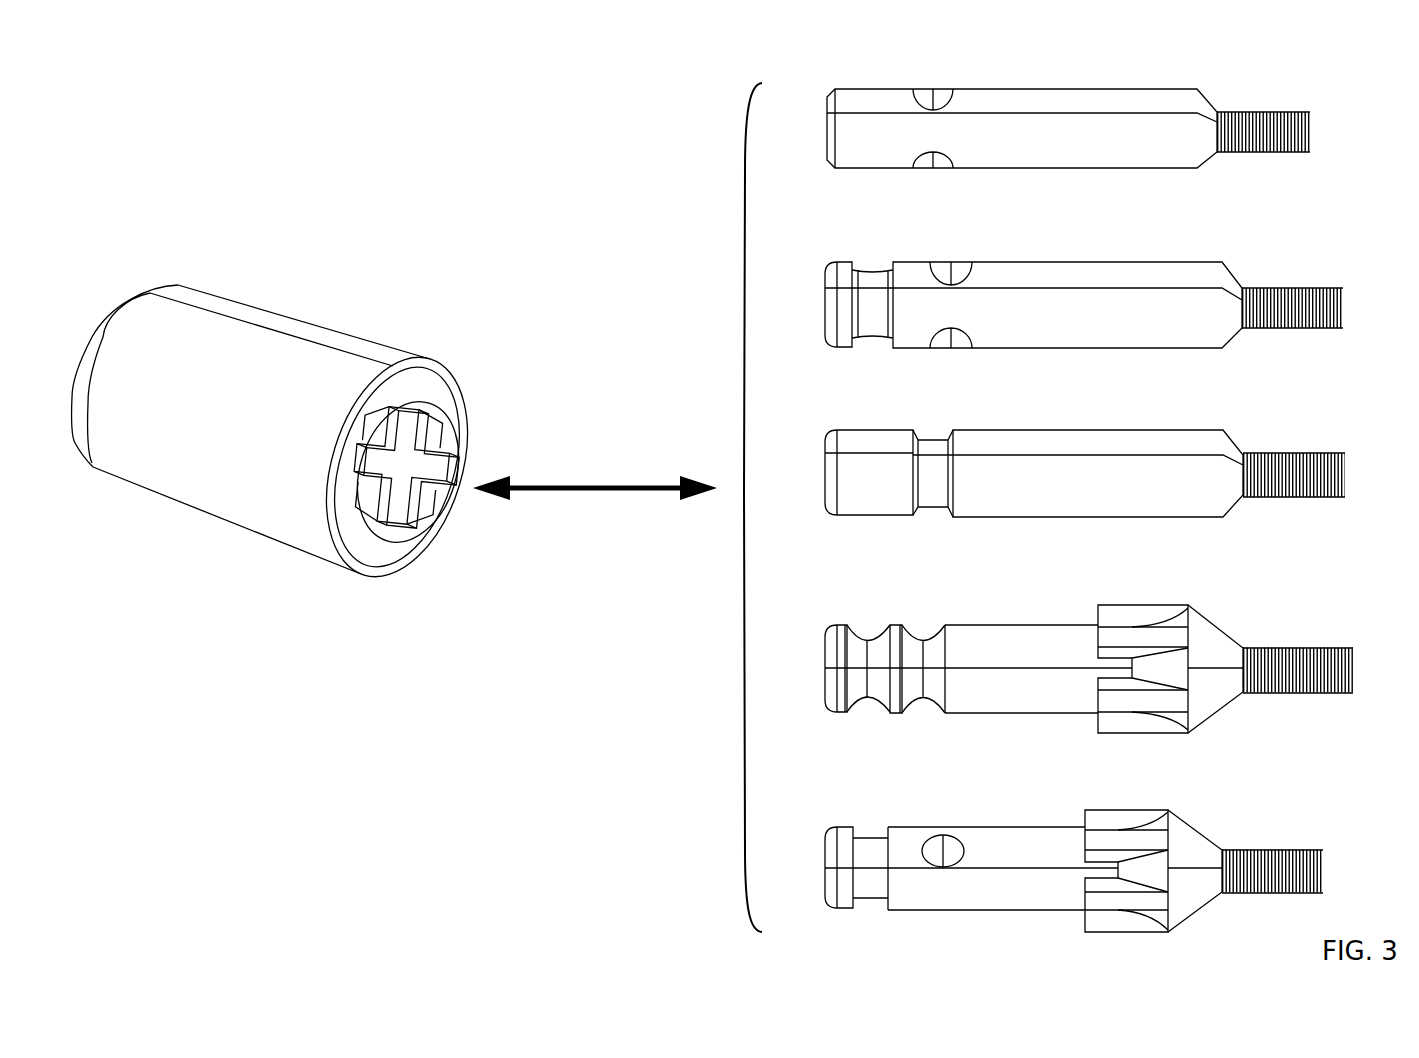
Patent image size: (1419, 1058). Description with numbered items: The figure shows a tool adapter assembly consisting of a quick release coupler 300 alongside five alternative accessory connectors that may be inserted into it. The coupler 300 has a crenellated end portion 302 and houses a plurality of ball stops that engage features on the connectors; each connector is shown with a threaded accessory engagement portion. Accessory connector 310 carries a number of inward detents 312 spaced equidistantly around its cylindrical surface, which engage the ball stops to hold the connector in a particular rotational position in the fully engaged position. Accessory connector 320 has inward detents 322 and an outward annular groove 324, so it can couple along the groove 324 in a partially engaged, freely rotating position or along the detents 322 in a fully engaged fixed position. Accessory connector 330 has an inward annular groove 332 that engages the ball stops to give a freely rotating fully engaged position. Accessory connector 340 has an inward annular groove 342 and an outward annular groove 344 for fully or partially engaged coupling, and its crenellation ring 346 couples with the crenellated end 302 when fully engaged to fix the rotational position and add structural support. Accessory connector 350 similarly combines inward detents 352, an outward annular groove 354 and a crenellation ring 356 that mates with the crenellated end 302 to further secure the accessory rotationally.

The quick release coupler 300 is at (356, 257).
The crenellated end portion 302 is at (462, 453).
The accessory connector 310 is at (1301, 82).
The inward detents 312 is at (935, 90).
The accessory connector 320 is at (1301, 257).
The inward detents 322 is at (957, 262).
The outward annular groove 324 is at (875, 270).
The accessory connector 330 is at (1300, 425).
The inward annular groove 332 is at (938, 435).
The accessory connector 340 is at (1300, 613).
The inward annular groove 342 is at (925, 633).
The outward annular groove 344 is at (867, 635).
The crenellation ring 346 is at (1107, 605).
The accessory connector 350 is at (1301, 817).
The inward detents 352 is at (945, 835).
The outward annular groove 354 is at (867, 832).
The crenellation ring 356 is at (1118, 810).